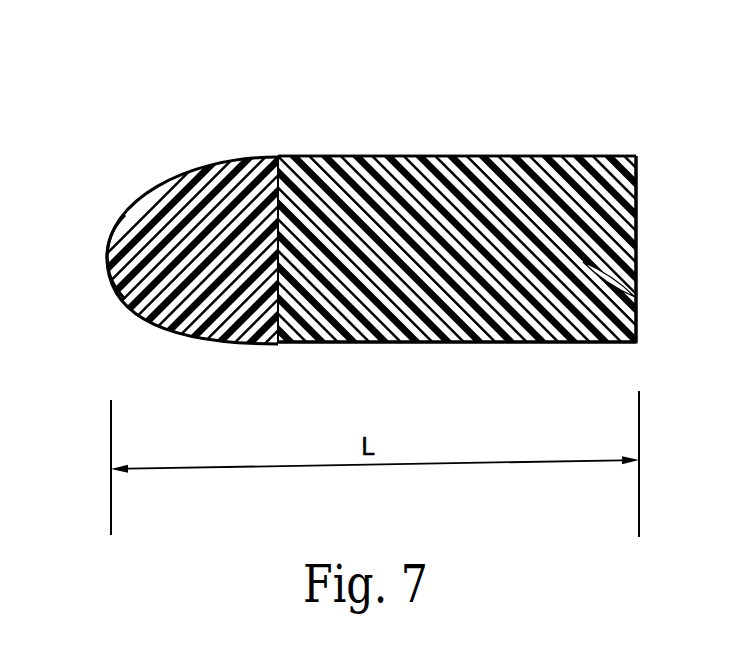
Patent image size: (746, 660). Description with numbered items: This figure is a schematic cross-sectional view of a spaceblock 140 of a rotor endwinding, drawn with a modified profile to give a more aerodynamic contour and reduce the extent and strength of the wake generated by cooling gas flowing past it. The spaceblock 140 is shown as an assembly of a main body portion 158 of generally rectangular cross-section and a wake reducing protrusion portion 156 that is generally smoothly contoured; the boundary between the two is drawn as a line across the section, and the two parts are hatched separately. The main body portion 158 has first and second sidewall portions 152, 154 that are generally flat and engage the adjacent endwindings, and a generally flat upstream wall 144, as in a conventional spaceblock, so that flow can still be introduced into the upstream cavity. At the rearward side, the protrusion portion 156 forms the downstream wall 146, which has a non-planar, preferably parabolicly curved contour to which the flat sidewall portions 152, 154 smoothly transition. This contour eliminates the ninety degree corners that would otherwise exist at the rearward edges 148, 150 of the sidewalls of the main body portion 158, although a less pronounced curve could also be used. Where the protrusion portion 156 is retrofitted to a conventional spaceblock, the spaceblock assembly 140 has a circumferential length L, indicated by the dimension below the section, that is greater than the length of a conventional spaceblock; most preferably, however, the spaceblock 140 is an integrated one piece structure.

The spaceblock 140 is at (421, 116).
The upstream wall 144 is at (637, 247).
The downstream wall 146 is at (106, 247).
The rearward edge 148 is at (280, 346).
The rearward edge 150 is at (279, 158).
The first sidewall portion 152 is at (537, 342).
The second sidewall portion 154 is at (557, 157).
The wake reducing protrusion portion 156 is at (174, 208).
The main body portion 158 is at (636, 298).